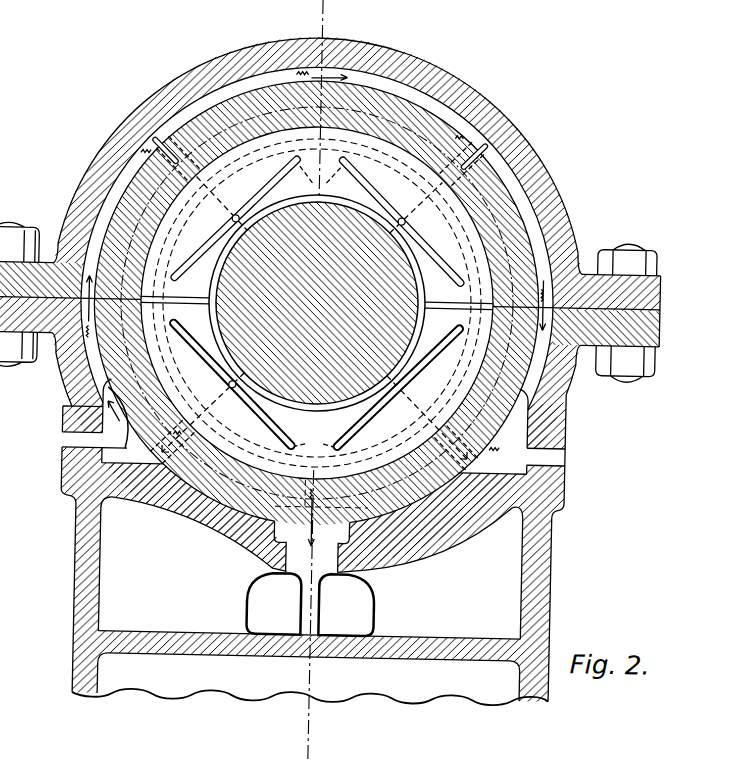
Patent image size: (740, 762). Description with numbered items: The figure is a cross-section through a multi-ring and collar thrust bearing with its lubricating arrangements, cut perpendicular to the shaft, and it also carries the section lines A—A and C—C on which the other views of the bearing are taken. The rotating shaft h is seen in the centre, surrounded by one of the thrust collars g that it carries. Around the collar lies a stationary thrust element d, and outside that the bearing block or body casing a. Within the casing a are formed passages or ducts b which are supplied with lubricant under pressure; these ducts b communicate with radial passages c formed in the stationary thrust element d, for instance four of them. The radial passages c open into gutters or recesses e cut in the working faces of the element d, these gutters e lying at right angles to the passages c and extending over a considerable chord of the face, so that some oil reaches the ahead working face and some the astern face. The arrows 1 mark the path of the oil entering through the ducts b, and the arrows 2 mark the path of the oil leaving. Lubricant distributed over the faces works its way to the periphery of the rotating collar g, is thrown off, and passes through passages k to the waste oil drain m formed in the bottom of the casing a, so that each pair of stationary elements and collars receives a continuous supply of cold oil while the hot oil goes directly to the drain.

The bearing block or body casing a is at (486, 115).
The passages or ducts b is at (105, 219).
The radial passages c is at (317, 308).
The stationary thrust elements d is at (148, 338).
The gutters or recesses e is at (317, 303).
The thrust collars g is at (468, 197).
The rotating shaft h is at (405, 316).
The passages k is at (345, 446).
The waste oil drain m is at (310, 605).
The arrows indicating oil entering 1 is at (297, 72).
The arrows indicating oil leaving 2 is at (321, 527).
The section line C— C is at (194, 179).
The section line A— A is at (325, 381).